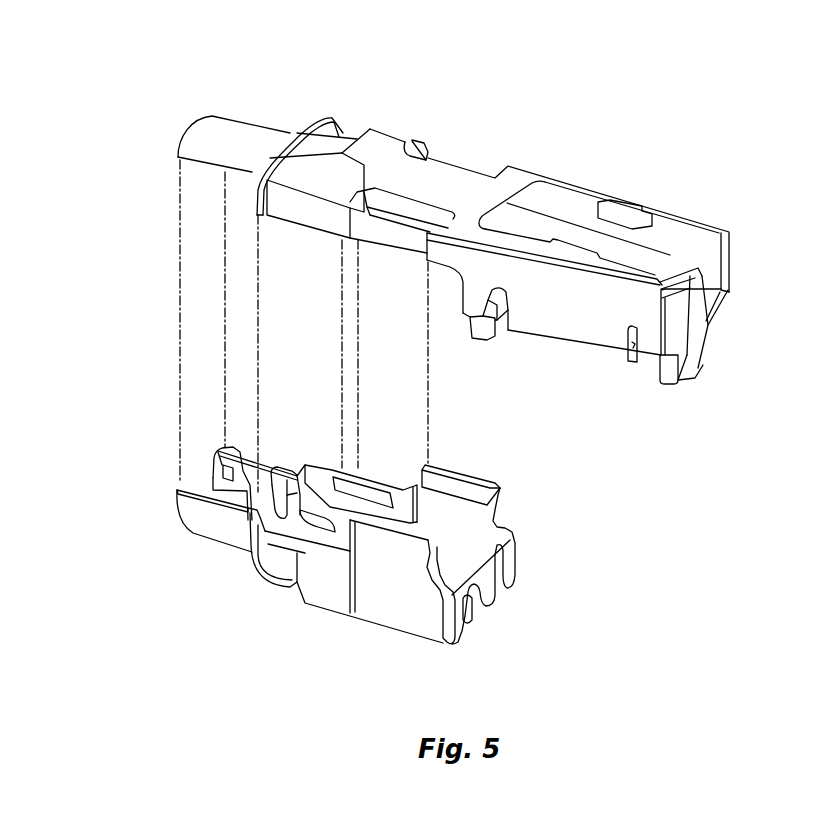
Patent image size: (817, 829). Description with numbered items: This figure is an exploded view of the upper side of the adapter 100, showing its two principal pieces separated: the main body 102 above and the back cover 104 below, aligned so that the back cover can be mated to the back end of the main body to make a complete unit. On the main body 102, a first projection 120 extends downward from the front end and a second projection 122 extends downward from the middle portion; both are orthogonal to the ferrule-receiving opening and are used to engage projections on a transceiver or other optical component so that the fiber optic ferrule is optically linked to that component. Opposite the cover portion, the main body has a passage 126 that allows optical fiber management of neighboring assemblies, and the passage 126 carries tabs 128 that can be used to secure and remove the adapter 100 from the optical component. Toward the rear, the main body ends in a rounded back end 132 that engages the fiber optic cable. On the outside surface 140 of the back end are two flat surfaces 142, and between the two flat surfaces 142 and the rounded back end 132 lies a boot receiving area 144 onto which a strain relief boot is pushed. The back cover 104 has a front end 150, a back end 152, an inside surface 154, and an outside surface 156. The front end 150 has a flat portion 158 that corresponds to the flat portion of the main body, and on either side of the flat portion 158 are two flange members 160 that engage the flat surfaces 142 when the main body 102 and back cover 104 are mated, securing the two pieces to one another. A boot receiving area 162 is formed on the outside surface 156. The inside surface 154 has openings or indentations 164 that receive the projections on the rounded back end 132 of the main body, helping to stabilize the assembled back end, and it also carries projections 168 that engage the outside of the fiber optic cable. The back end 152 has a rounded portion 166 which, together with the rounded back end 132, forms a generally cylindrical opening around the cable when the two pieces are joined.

The adapter 100 is at (755, 98).
The main body 102 is at (688, 218).
The back cover 104 is at (333, 608).
The first projection 120 is at (695, 366).
The second projection 122 is at (497, 337).
The passage 126 is at (557, 223).
The tabs 128 is at (625, 214).
The rounded back end 132 is at (235, 132).
The outside surface 140 is at (320, 193).
The flat surfaces 142 is at (390, 224).
The boot receiving area 144 is at (337, 127).
The front end 150 is at (505, 585).
The back end 152 is at (180, 510).
The inside surface 154 is at (280, 490).
The outside surface 156 is at (407, 626).
The flat portion 158 is at (472, 556).
The flange members 160 is at (437, 548).
The boot receiving area 162 is at (286, 582).
The openings or indentations 164 is at (378, 487).
The rounded portion 166 is at (218, 540).
The projections 168 is at (243, 475).